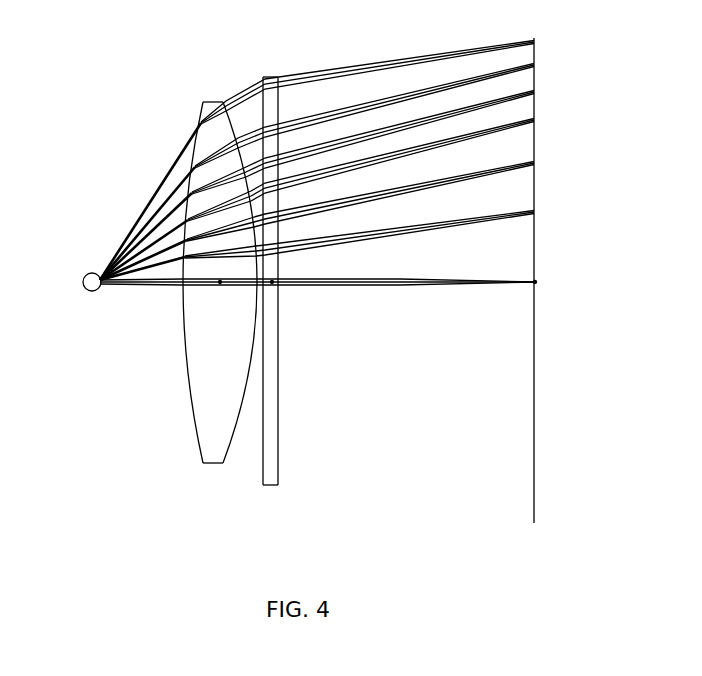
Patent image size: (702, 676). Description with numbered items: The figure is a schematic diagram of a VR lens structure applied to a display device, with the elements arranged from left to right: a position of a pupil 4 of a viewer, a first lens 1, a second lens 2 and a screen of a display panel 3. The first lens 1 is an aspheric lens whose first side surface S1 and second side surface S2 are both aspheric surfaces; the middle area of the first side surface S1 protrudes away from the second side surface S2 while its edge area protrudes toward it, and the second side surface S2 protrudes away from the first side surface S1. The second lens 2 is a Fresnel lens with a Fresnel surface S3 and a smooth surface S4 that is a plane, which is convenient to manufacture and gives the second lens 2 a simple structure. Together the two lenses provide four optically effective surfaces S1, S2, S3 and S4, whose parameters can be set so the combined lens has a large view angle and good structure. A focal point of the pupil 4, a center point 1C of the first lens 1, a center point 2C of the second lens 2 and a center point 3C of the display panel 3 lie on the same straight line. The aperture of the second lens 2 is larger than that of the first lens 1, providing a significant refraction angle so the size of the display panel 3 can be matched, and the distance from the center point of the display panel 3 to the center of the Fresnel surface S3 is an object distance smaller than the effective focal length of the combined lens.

The first lens 1 is at (192, 314).
The second lens 2 is at (258, 324).
The display panel 3 is at (533, 477).
The pupil 4 is at (84, 290).
The center point of the first lens 1C is at (220, 283).
The center point of the second lens 2C is at (272, 283).
The center point of the display panel 3C is at (536, 283).
The first side surface S1 is at (181, 282).
The second side surface S2 is at (240, 282).
The Fresnel surface S3 is at (294, 281).
The smooth surface S4 is at (247, 281).